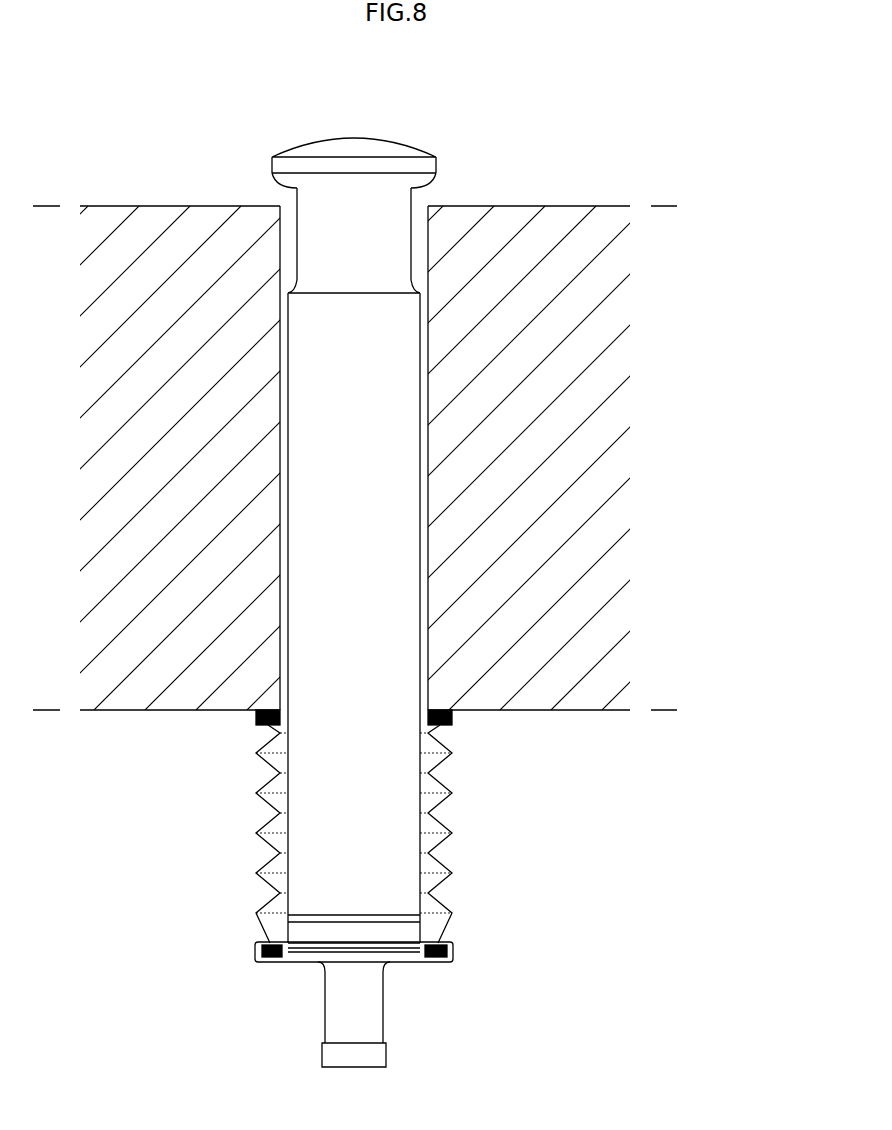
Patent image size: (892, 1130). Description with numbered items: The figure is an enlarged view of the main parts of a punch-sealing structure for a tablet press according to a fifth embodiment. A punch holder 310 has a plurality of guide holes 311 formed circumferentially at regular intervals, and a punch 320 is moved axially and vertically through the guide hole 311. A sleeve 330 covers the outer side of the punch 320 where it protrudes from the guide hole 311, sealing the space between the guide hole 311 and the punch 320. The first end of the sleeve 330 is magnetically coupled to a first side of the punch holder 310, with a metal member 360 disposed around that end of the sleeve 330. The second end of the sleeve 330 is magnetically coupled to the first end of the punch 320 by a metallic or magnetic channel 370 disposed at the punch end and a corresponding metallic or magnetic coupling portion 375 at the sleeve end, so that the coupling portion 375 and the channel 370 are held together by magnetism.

The punch holder 310 is at (165, 233).
The guide hole 311 is at (420, 216).
The punch 320 is at (400, 418).
The sleeve 330 is at (440, 823).
The metal member 360 is at (452, 725).
The channel 370 is at (438, 962).
The coupling portion 375 is at (440, 938).